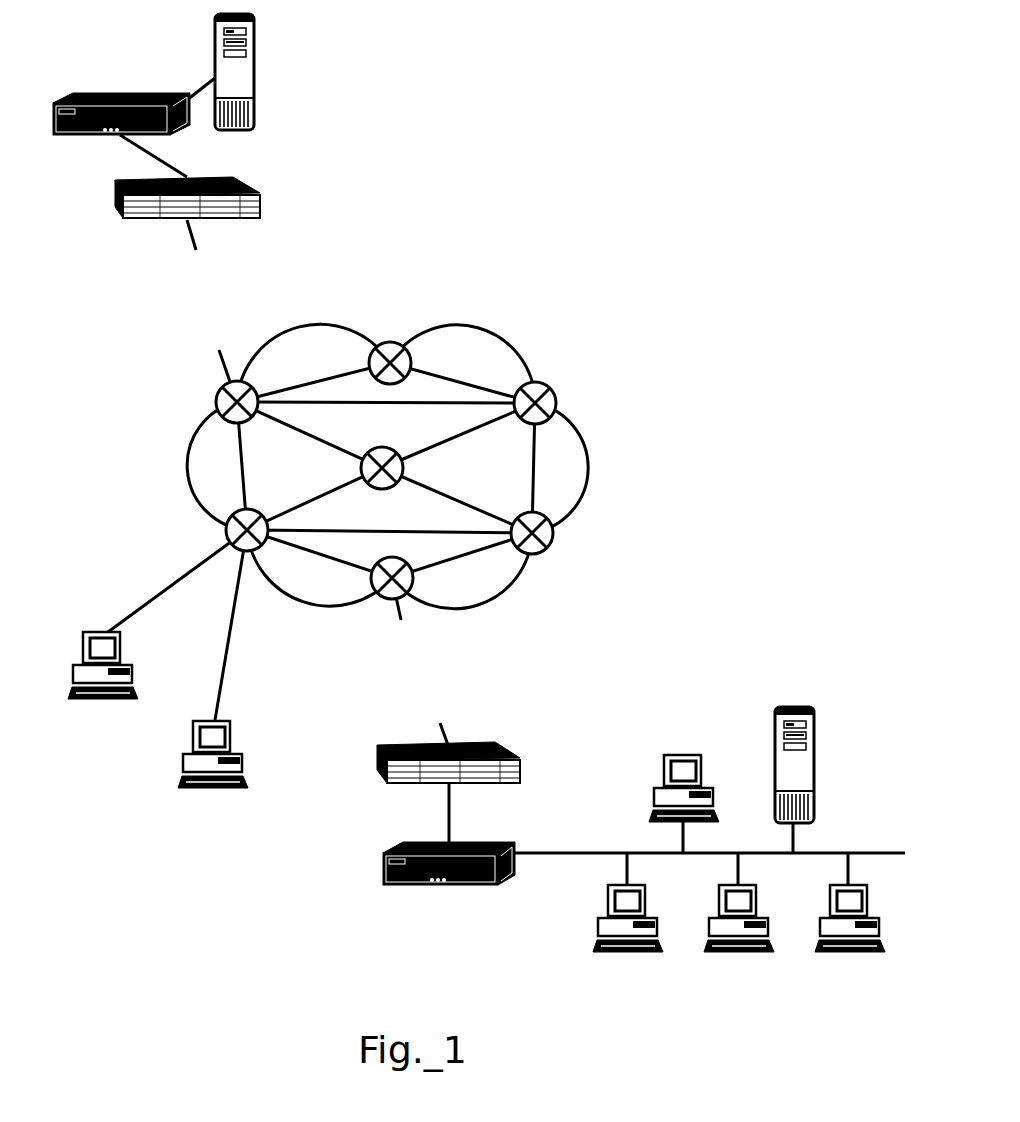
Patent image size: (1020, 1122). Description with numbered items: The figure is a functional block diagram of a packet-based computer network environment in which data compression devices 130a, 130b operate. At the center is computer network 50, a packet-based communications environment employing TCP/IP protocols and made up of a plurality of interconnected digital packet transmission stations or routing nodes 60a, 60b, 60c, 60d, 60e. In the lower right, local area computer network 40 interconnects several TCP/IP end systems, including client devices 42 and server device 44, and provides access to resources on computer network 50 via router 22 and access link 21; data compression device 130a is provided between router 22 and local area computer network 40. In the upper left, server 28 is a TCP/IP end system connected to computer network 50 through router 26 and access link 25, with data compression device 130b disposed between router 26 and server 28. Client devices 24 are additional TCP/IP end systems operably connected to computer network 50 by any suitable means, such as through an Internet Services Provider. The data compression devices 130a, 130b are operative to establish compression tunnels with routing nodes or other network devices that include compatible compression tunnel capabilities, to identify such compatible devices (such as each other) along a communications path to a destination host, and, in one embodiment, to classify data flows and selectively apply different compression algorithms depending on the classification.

The data compression device 130b is at (85, 93).
The server 28 is at (254, 72).
The router 26 is at (260, 207).
The access link 25 is at (197, 220).
The computer network 50 is at (295, 336).
The routing node 60a is at (390, 592).
The routing node 60b is at (227, 540).
The routing node 60c is at (220, 384).
The routing node 60d is at (362, 468).
The routing node 60e is at (390, 345).
The client device 24 is at (118, 702).
The access link 21 is at (427, 675).
The router 22 is at (483, 745).
The data compression device 130a is at (482, 885).
The local area computer network 40 is at (905, 853).
The client device 42 is at (683, 755).
The server device 44 is at (800, 708).